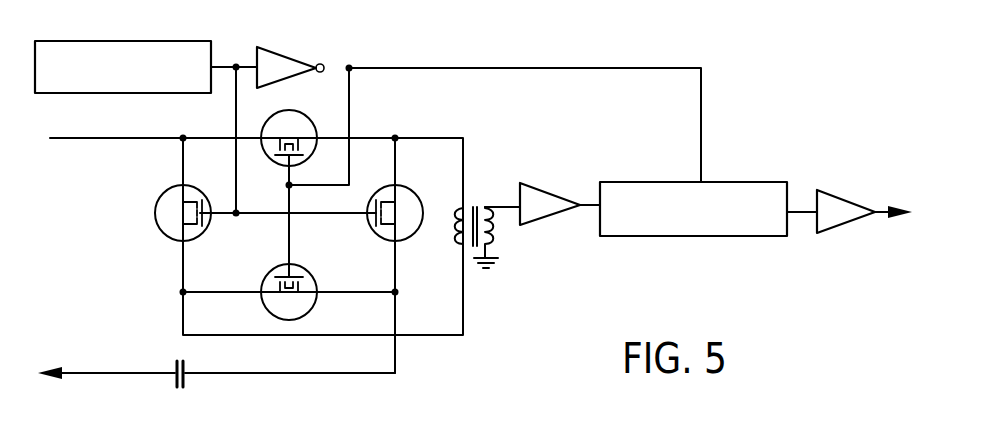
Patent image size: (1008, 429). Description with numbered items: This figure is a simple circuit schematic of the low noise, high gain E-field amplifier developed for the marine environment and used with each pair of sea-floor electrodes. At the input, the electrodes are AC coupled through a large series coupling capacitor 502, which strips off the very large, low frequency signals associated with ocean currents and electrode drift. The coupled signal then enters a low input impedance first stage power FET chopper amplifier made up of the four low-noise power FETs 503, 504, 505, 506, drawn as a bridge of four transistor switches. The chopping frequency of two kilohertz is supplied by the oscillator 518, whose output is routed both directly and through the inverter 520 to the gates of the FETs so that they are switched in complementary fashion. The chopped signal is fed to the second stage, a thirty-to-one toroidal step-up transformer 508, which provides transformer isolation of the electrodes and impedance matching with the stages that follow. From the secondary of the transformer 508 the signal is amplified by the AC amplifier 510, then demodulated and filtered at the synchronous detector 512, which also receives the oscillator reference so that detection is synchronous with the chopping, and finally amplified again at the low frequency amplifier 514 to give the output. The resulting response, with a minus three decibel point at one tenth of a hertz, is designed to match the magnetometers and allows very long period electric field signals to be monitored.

The series coupling capacitor 502 is at (190, 380).
The low-noise power FET 503 is at (369, 221).
The low-noise power FET 504 is at (288, 112).
The low-noise power FET 505 is at (162, 190).
The low-noise power FET 506 is at (263, 277).
The toroidal step-up transformer 508 is at (493, 228).
The AC amplifier 510 is at (540, 187).
The synchronous detector 512 is at (725, 182).
The low frequency amplifier 514 is at (837, 228).
The oscillator 518 is at (133, 41).
The inverter 520 is at (283, 55).